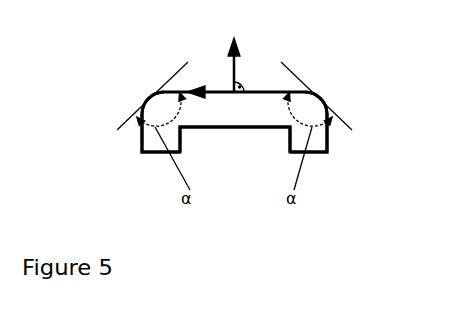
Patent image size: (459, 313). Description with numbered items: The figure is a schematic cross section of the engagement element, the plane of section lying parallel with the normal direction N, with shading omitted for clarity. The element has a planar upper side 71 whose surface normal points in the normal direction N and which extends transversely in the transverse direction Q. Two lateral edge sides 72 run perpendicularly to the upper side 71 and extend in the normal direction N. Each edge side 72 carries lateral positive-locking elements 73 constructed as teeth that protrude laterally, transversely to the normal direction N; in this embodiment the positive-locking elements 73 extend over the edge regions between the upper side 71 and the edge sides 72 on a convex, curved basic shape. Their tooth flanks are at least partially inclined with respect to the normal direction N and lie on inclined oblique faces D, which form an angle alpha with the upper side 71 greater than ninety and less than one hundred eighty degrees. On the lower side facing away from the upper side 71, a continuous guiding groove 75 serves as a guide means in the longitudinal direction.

The upper side 71 is at (262, 90).
The lateral edge sides 72 is at (240, 153).
The lateral positive-locking elements 73 is at (151, 106).
The guiding groove 75 is at (227, 128).
The normal direction N is at (238, 68).
The transverse direction Q is at (192, 66).
The oblique faces D is at (122, 123).